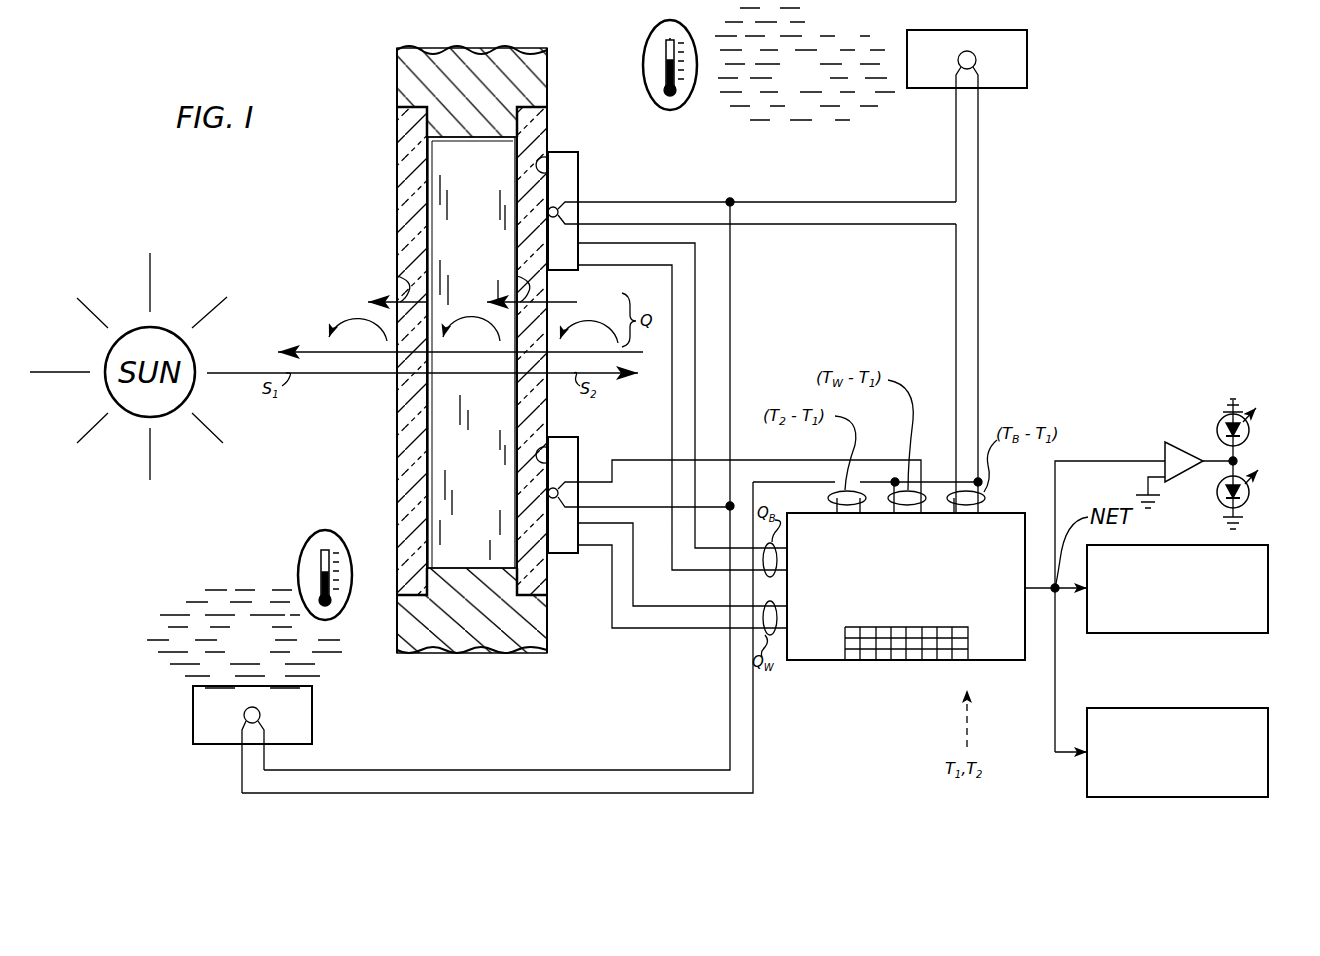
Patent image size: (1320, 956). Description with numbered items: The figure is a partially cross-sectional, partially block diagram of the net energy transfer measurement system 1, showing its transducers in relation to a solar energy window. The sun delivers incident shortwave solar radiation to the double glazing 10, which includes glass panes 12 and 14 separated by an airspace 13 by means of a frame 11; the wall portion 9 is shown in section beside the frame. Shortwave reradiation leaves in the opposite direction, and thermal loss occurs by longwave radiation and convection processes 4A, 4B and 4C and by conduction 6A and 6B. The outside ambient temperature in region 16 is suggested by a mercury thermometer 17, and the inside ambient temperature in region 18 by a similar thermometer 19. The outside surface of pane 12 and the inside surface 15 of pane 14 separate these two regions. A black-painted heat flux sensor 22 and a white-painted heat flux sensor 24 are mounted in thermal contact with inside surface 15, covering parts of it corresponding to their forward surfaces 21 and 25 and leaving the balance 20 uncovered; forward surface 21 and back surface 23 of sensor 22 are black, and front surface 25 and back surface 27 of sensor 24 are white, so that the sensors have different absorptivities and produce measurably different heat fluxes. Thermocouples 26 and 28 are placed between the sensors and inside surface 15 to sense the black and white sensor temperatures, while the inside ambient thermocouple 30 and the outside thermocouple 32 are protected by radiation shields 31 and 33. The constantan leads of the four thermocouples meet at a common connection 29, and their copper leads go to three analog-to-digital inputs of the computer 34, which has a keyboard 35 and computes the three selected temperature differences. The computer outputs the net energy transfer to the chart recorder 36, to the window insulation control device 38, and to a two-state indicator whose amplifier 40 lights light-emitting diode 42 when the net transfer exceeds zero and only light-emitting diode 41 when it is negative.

The NET measurement system 1 is at (1090, 241).
The inside wall portion 9 is at (397, 218).
The double glazing 10 is at (320, 136).
The frame 11 is at (412, 60).
The glass pane 12 is at (397, 172).
The airspace 13 is at (473, 210).
The glass pane 14 is at (518, 148).
The inside surface 15 is at (548, 143).
The outside region 16 is at (190, 596).
The thermometer 17 is at (350, 559).
The inside region 18 is at (885, 10).
The thermometer 19 is at (656, 40).
The balance of inside surface 20 is at (548, 422).
The sensor forward surface 21 is at (556, 175).
The black heat flux sensor 22 is at (578, 152).
The back surface 23 is at (578, 188).
The white heat flux sensor 24 is at (564, 553).
The front surface 25 is at (555, 455).
The thermocouple 26 is at (548, 213).
The back surface 27 is at (578, 470).
The thermocouple 28 is at (548, 493).
The common connection 29 is at (730, 372).
The inside ambient temperature thermocouple 30 is at (970, 52).
The radiation shield 31 is at (1017, 88).
The outside temperature thermocouple 32 is at (244, 716).
The radiation shield 33 is at (312, 732).
The computer 34 is at (813, 653).
The keyboard 35 is at (884, 657).
The chart recorder 36 is at (1236, 633).
The window insulation control device 38 is at (1179, 708).
The amplifier 40 is at (1176, 444).
The light-emitting diode 41 is at (1220, 412).
The light-emitting diode 42 is at (1246, 503).
The longwave radiation and convection process 4A is at (600, 327).
The longwave radiation and convection process 4B is at (460, 327).
The longwave radiation and convection process 4C is at (336, 327).
The conduction 6A is at (517, 280).
The conduction 6B is at (397, 280).